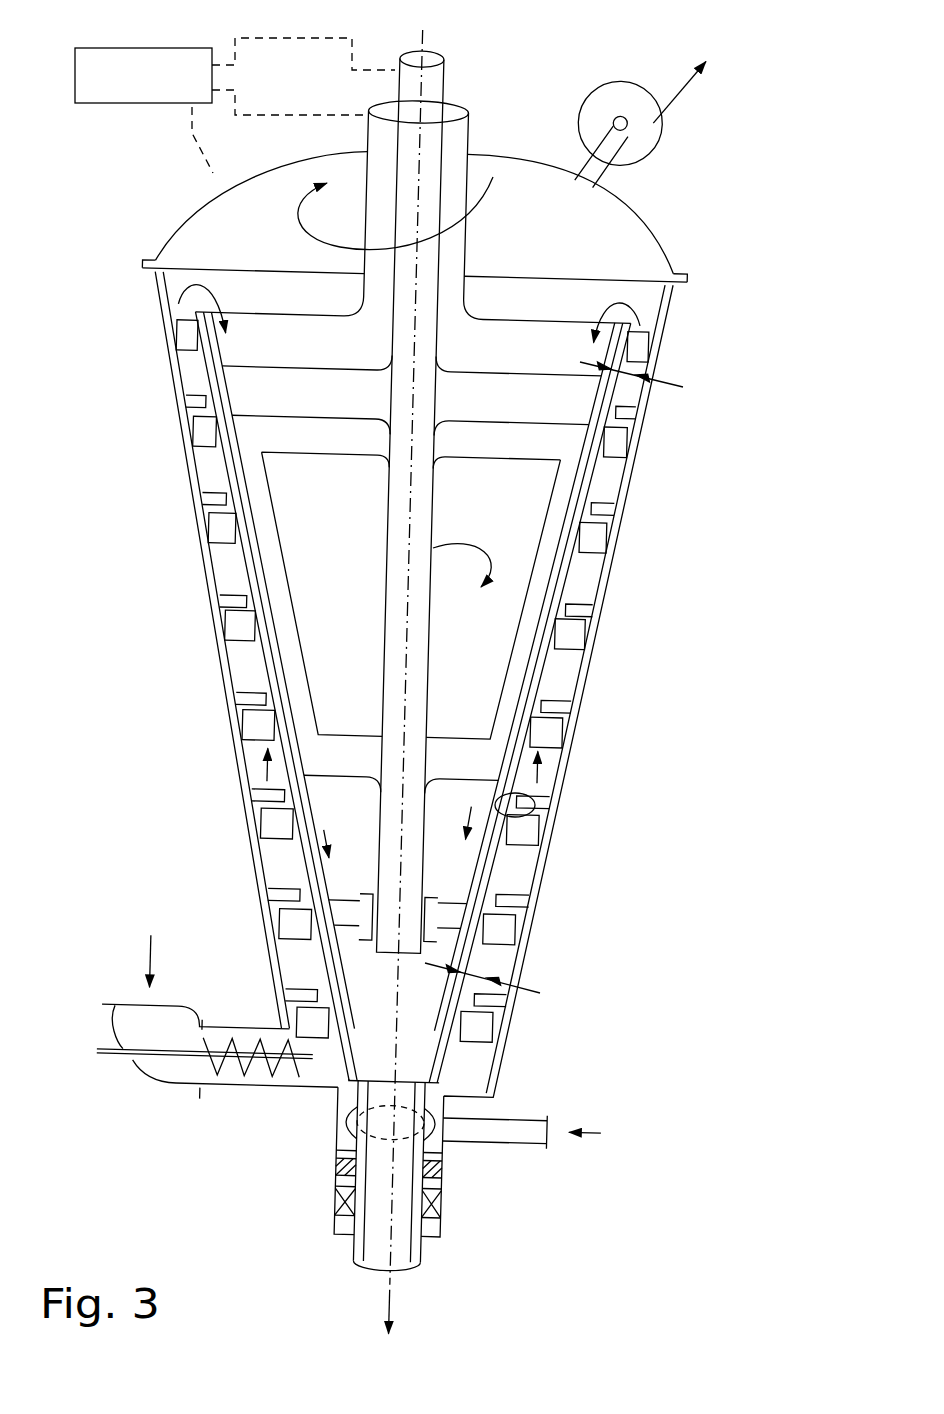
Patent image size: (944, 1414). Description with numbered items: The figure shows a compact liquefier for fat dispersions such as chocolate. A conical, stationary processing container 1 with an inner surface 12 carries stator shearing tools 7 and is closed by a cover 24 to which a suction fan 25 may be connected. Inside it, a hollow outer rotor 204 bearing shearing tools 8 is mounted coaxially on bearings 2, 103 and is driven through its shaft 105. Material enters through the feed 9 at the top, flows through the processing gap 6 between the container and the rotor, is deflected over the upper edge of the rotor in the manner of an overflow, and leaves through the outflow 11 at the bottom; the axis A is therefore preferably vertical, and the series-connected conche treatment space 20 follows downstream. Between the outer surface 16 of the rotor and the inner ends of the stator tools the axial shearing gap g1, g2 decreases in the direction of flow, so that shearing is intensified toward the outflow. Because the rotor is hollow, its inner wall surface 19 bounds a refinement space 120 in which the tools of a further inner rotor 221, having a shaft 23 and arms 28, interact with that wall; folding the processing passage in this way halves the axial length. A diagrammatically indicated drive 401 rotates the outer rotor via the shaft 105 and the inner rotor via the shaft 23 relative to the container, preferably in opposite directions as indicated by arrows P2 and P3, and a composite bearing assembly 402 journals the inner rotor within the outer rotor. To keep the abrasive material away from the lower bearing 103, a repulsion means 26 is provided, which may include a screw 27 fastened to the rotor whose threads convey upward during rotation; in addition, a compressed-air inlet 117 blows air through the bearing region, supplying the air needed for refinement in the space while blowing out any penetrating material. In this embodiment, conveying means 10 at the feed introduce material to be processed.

The processing container 1 is at (230, 737).
The bearing 2 is at (472, 143).
The processing gap 6 is at (207, 470).
The shearing tools of the container 7 is at (233, 598).
The shearing tools of the rotor 8 is at (242, 648).
The feed 9 is at (237, 1028).
The screw conveyor 10 is at (235, 1070).
The outflow 11 is at (375, 1243).
The inner surface of the container 12 is at (555, 857).
The outer surface of the rotor 16 is at (550, 662).
The inner wall surface 19 is at (547, 815).
The conche treatment space 20 is at (230, 577).
The shaft 23 is at (447, 80).
The cover 24 is at (187, 200).
The suction fan 25 is at (650, 157).
The repulsion means 26 is at (330, 1127).
The screw 27 is at (400, 1110).
The arms 28 is at (310, 453).
The lower bearing 103 is at (340, 1177).
The shaft 105 is at (370, 107).
The inlet 117 is at (530, 1110).
The refinement space 120 is at (484, 647).
The rotor 204 is at (270, 848).
The further rotor 221 is at (265, 542).
The drive 401 is at (140, 107).
The composite bearing assembly 402 is at (443, 1203).
The axis A is at (420, 32).
The arrow P2 is at (480, 200).
The arrow P3 is at (335, 597).
The shearing gap g1 is at (494, 976).
The shearing gap g2 is at (639, 361).